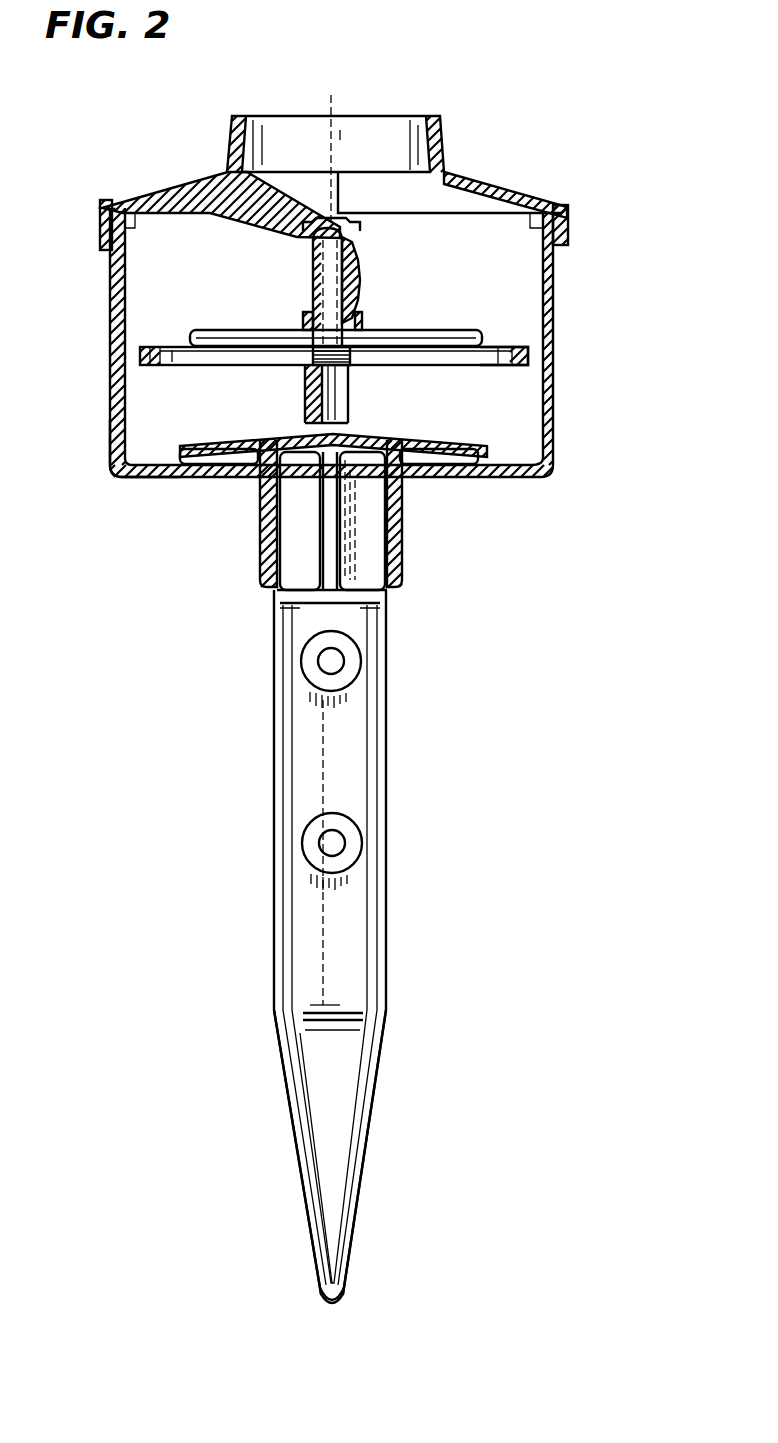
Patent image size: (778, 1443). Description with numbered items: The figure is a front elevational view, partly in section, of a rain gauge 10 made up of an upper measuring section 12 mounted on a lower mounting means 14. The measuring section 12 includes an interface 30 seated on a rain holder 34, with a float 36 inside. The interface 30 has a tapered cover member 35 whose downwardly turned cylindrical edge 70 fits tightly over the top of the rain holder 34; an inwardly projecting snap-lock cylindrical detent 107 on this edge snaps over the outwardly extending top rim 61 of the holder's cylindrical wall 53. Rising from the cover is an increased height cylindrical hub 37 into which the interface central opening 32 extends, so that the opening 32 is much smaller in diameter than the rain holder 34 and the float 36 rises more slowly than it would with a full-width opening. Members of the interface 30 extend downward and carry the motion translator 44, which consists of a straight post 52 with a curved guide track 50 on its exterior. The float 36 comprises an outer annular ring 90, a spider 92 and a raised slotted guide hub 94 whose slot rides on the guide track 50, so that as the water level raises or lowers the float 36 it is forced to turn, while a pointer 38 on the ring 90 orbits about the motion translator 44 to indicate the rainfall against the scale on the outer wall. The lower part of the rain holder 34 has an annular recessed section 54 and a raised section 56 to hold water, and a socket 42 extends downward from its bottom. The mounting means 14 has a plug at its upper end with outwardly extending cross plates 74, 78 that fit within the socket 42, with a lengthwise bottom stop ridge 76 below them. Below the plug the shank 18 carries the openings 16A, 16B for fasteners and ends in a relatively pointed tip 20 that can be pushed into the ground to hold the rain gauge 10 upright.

The rain gauge 10 is at (268, 83).
The measuring section 12 is at (637, 110).
The mounting means 14 is at (268, 790).
The opening 16A is at (335, 662).
The opening 16B is at (335, 845).
The shank 18 is at (397, 1152).
The tip 20 is at (328, 1307).
The interface 30 is at (170, 172).
The interface central opening 32 is at (355, 105).
The rain holder 34 is at (565, 340).
The tapered cover member 35 is at (517, 185).
The float 36 is at (160, 337).
The cylindrical hub 37 is at (441, 150).
The pointer 38 is at (350, 360).
The socket 42 is at (260, 530).
The motion translator 44 is at (376, 271).
The curved guide track 50 is at (358, 283).
The post 52 is at (313, 272).
The cylindrical wall 53 is at (122, 410).
The annular recessed section 54 is at (150, 462).
The raised section 56 is at (238, 437).
The top rim 61 is at (105, 212).
The cylindrical edge 70 is at (568, 232).
The cross plate 74 is at (380, 565).
The bottom stop ridge 76 is at (290, 598).
The cross plate 78 is at (340, 525).
The outer annular ring 90 is at (490, 365).
The spider 92 is at (243, 330).
The raised slotted guide hub 94 is at (362, 316).
The snap-lock cylindrical detent 107 is at (122, 235).